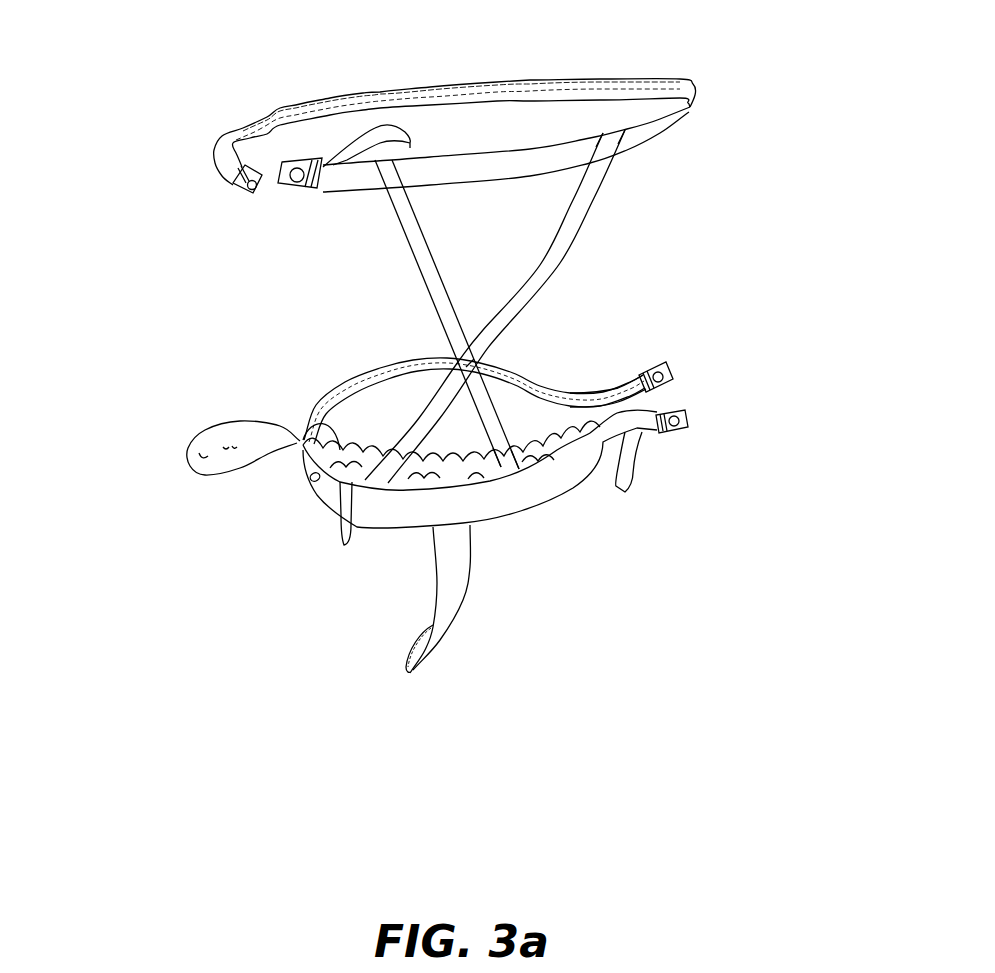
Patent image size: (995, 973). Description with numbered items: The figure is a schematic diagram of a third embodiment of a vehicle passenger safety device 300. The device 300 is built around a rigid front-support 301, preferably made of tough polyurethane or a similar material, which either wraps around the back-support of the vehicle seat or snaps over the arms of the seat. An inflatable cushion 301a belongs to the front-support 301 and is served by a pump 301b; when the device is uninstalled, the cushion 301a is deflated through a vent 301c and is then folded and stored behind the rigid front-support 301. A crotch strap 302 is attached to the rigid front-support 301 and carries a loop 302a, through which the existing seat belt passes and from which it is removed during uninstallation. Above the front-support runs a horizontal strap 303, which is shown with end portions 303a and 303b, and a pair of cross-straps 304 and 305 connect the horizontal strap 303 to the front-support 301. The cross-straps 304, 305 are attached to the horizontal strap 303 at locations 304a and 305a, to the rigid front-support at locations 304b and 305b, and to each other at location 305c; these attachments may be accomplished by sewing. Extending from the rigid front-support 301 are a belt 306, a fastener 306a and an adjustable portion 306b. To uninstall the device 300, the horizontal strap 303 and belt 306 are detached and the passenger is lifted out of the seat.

The vehicle passenger safety device 300 is at (767, 205).
The rigid front-support 301 is at (508, 514).
The inflatable cushion 301a is at (323, 420).
The pump 301b is at (186, 455).
The vent 301c is at (307, 478).
The crotch strap 302 is at (468, 580).
The loop 302a is at (408, 672).
The horizontal strap 303 is at (697, 92).
The upper band buckle end 303a is at (237, 183).
The upper band strap loop 303b is at (413, 143).
The cross-strap 304 is at (408, 265).
The location 304a is at (378, 193).
The location 304b is at (547, 473).
The cross-strap 305 is at (583, 222).
The location 305a is at (617, 155).
The location 305b is at (343, 532).
The location 305c is at (486, 364).
The belt 306 is at (615, 380).
The fastener 306a is at (672, 375).
The adjustable portion 306b is at (635, 472).